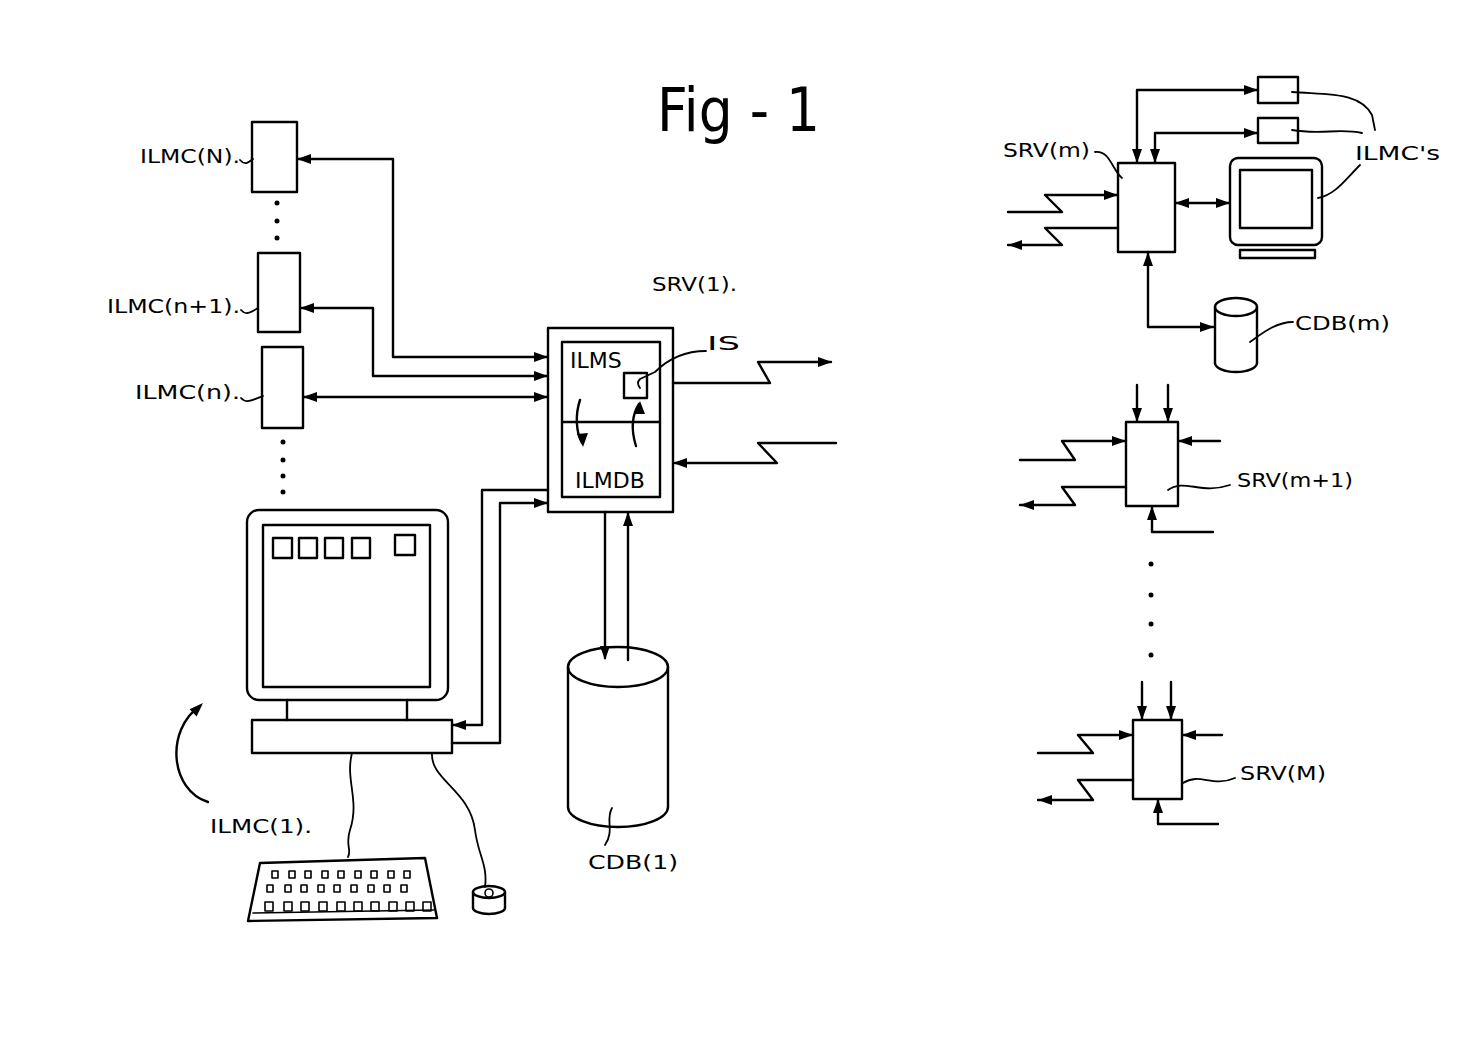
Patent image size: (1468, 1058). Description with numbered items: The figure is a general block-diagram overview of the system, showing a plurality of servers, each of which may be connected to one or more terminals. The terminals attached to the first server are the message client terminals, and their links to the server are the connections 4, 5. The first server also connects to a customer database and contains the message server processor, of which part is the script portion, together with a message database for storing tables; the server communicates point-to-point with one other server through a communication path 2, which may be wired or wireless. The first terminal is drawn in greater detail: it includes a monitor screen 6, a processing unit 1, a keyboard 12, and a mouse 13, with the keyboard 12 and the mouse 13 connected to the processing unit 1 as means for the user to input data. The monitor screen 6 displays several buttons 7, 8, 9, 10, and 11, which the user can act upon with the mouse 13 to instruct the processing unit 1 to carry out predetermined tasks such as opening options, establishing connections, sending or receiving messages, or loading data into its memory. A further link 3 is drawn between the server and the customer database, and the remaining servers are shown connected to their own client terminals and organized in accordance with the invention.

The processing unit 1 is at (390, 743).
The communication path 2 is at (727, 383).
The link between server and central database 3 is at (641, 626).
The connection 4 is at (509, 628).
The connection 5 is at (457, 355).
The monitor screen 6 is at (257, 618).
The button 7 is at (280, 545).
The button 8 is at (308, 544).
The button 9 is at (332, 544).
The button 10 is at (362, 544).
The button 11 is at (400, 541).
The keyboard 12 is at (250, 905).
The mouse 13 is at (503, 905).